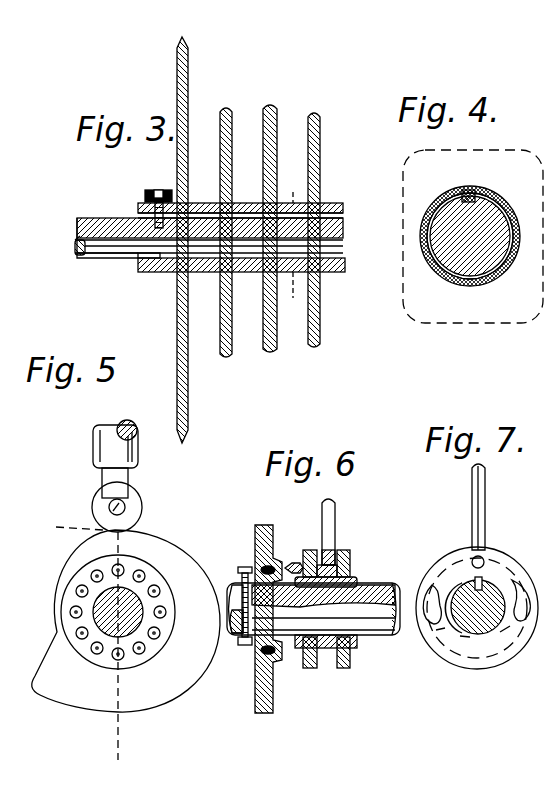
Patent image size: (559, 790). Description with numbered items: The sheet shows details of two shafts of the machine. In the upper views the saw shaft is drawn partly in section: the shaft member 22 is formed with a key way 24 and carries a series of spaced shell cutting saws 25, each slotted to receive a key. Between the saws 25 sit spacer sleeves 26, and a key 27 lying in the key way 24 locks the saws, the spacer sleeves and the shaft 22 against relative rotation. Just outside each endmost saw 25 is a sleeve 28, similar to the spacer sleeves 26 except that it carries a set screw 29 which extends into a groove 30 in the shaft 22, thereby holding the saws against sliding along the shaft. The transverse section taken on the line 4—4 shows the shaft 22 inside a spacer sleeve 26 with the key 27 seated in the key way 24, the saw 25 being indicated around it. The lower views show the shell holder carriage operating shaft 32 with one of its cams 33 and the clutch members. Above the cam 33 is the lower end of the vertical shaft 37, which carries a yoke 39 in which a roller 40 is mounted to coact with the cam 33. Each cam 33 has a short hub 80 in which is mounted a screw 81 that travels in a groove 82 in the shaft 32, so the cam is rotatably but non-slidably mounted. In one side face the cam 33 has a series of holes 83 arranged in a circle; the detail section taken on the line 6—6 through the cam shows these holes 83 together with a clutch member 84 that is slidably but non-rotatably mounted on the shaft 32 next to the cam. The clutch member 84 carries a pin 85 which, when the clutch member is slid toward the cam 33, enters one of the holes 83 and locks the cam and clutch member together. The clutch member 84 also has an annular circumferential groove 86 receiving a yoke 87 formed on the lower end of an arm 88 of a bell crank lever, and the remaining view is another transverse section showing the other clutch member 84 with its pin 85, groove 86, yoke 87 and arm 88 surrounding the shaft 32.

In FIG. 3, the line 4— 4 is at (292, 243).
In FIG. 5, the line 6— 6 is at (80, 650).
In FIG. 3, the shaft member 22 is at (83, 260).
In FIG. 4, the shaft member 22 is at (472, 256).
In FIG. 3, the key way 24 is at (100, 221).
In FIG. 3, the shell cutting saw 25 is at (321, 131).
In FIG. 4, the shell cutting saw 25 is at (470, 227).
In FIG. 3, the spacer sleeve 26 is at (202, 204).
In FIG. 4, the spacer sleeve 26 is at (455, 277).
In FIG. 3, the key 27 is at (326, 214).
In FIG. 4, the key 27 is at (481, 185).
In FIG. 3, the sleeve 28 is at (153, 274).
In FIG. 3, the set screw 29 is at (155, 192).
In FIG. 3, the groove 30 is at (142, 262).
In FIG. 5, the shaft 32 is at (108, 604).
In FIG. 6, the shaft 32 is at (313, 609).
In FIG. 7, the shaft 32 is at (498, 636).
In FIG. 5, the cam 33 is at (126, 621).
In FIG. 6, the cam 33 is at (262, 678).
In FIG. 5, the vertical shaft 37 is at (131, 451).
In FIG. 5, the yoke 39 is at (118, 486).
In FIG. 5, the roller 40 is at (140, 508).
In FIG. 6, the hub 80 is at (232, 588).
In FIG. 6, the screw 81 is at (244, 567).
In FIG. 6, the groove 82 is at (240, 648).
In FIG. 5, the holes 83 is at (160, 612).
In FIG. 6, the holes 83 is at (272, 655).
In FIG. 6, the clutch member 84 is at (352, 574).
In FIG. 7, the clutch member 84 is at (478, 658).
In FIG. 6, the pin 85 is at (295, 562).
In FIG. 7, the pin 85 is at (484, 559).
In FIG. 6, the annular circumferential groove 86 is at (327, 650).
In FIG. 7, the annular circumferential groove 86 is at (436, 628).
In FIG. 7, the yoke 87 is at (438, 593).
In FIG. 6, the arm 88 is at (328, 525).
In FIG. 7, the arm 88 is at (484, 501).